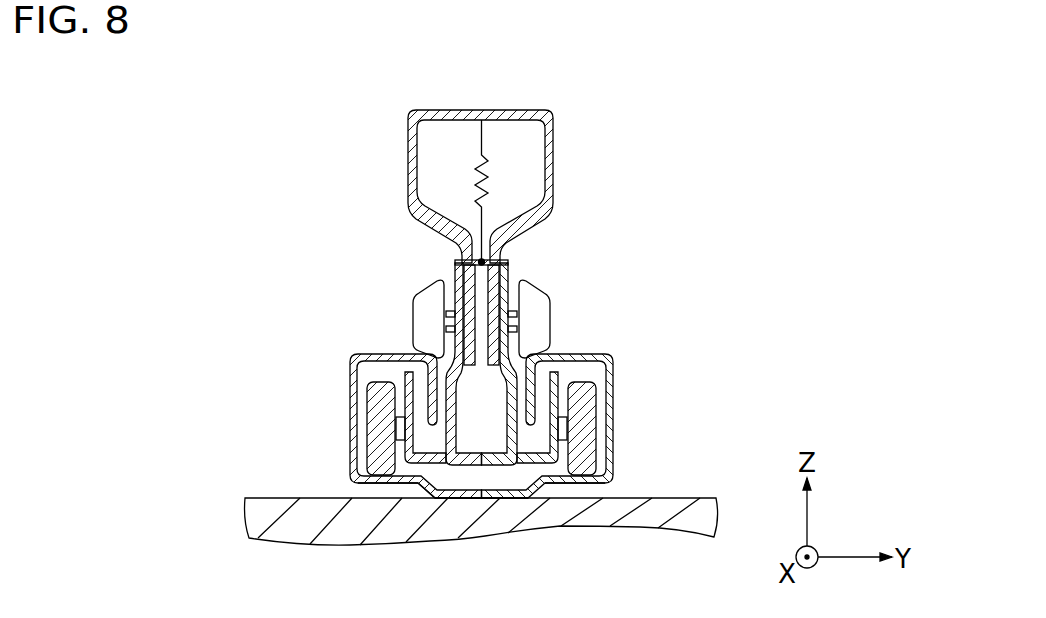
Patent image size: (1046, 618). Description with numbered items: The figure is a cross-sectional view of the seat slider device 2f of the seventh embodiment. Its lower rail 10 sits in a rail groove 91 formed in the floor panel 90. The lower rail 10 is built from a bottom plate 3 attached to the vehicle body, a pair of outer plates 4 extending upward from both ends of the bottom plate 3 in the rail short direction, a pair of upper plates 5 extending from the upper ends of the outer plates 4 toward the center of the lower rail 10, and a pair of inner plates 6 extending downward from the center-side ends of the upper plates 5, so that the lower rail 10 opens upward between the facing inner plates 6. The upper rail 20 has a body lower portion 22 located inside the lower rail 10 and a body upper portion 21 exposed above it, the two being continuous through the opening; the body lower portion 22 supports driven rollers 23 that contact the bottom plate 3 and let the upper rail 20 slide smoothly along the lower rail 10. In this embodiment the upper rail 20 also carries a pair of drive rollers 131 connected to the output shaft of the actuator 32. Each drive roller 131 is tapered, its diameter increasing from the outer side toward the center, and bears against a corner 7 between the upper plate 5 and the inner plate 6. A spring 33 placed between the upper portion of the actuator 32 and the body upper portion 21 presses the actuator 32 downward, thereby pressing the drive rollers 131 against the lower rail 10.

The seat slider device 2f is at (290, 87).
The upper rail 20 is at (406, 97).
The body upper portion 21 is at (497, 110).
The spring 33 is at (488, 172).
The actuator 32 is at (498, 266).
The drive rollers 131 is at (420, 297).
The lower rail 10 is at (323, 346).
The upper plates 5 is at (372, 357).
The corner 7 is at (422, 378).
The inner plates 6 is at (403, 404).
The outer plates 4 is at (386, 470).
The driven rollers 23 is at (378, 462).
The rail groove 91 is at (432, 492).
The body lower portion 22 is at (458, 440).
The bottom plate 3 is at (500, 496).
The floor panel 90 is at (688, 522).